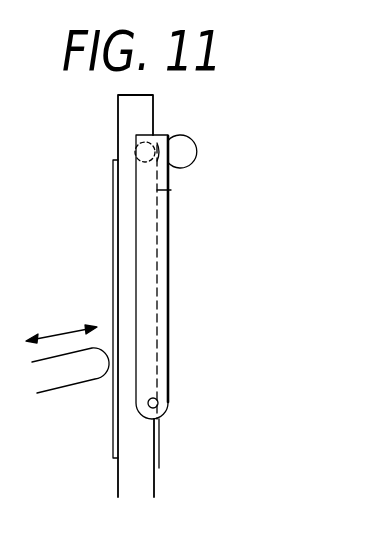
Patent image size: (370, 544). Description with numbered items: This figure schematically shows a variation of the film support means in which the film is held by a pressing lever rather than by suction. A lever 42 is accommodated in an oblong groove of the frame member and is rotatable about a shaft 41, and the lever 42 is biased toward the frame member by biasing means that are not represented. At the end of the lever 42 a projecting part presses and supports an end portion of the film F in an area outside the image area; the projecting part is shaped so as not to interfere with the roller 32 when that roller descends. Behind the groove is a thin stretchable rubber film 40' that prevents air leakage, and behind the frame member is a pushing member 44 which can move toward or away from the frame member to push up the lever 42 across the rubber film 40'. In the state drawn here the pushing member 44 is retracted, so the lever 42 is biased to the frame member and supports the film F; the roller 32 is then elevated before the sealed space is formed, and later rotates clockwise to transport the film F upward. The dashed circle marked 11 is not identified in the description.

The pin 11 is at (138, 149).
The roller 32 is at (198, 150).
The film F is at (171, 190).
The lever 42 is at (146, 247).
The shaft 41 is at (158, 400).
The pushing member 44 is at (74, 373).
The thin stretchable rubber film 40' is at (87, 332).